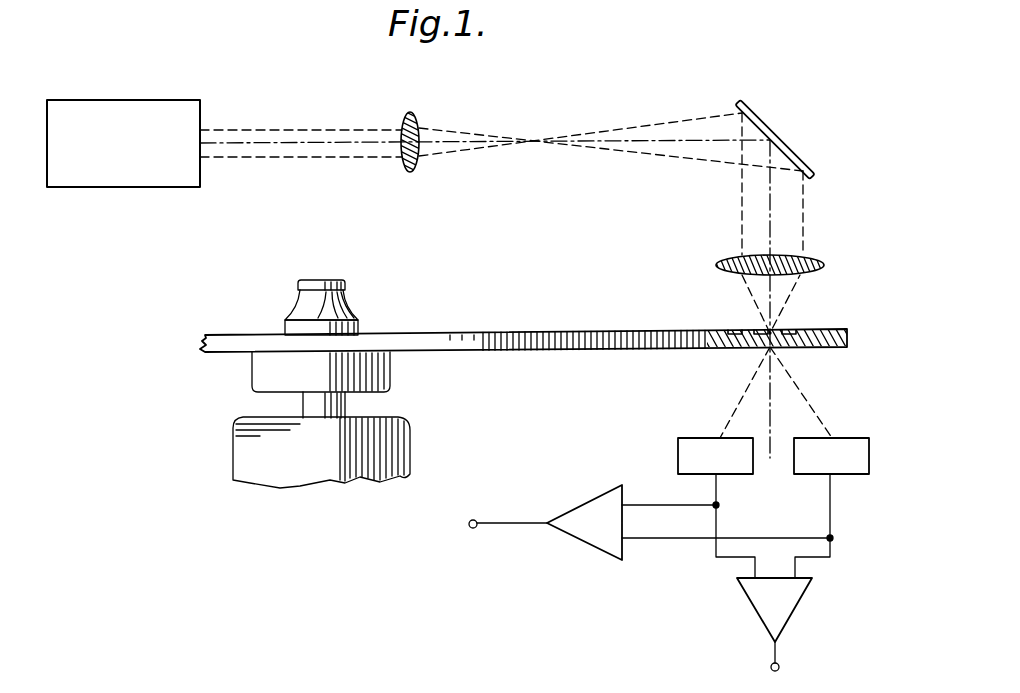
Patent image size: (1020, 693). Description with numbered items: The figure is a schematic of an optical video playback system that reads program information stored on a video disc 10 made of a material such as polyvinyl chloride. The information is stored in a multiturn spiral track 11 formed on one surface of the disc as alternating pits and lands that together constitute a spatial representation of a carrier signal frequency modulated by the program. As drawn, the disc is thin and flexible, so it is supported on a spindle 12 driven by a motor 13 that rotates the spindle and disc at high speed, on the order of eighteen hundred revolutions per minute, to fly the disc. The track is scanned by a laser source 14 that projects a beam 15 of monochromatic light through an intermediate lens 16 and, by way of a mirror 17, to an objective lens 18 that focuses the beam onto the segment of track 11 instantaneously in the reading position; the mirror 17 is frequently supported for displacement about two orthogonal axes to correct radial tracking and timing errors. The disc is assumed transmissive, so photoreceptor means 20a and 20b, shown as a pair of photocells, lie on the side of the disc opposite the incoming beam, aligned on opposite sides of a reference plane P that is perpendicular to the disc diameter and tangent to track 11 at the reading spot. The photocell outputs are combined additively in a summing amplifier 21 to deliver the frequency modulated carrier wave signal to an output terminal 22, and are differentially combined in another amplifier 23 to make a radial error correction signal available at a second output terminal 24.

The video disc 10 is at (848, 338).
The track 11 is at (796, 330).
The spindle 12 is at (372, 402).
The motor 13 is at (412, 435).
The laser source 14 is at (152, 100).
The beam 15 is at (332, 128).
The intermediate lens 16 is at (418, 121).
The mirror 17 is at (764, 124).
The objective lens 18 is at (808, 261).
The photoreceptor means 20a is at (678, 452).
The photoreceptor means 20b is at (866, 458).
The summing amplifier 21 is at (591, 500).
The output terminal 22 is at (475, 520).
The amplifier 23 is at (791, 606).
The second output terminal 24 is at (780, 669).
The reference plane P is at (778, 428).